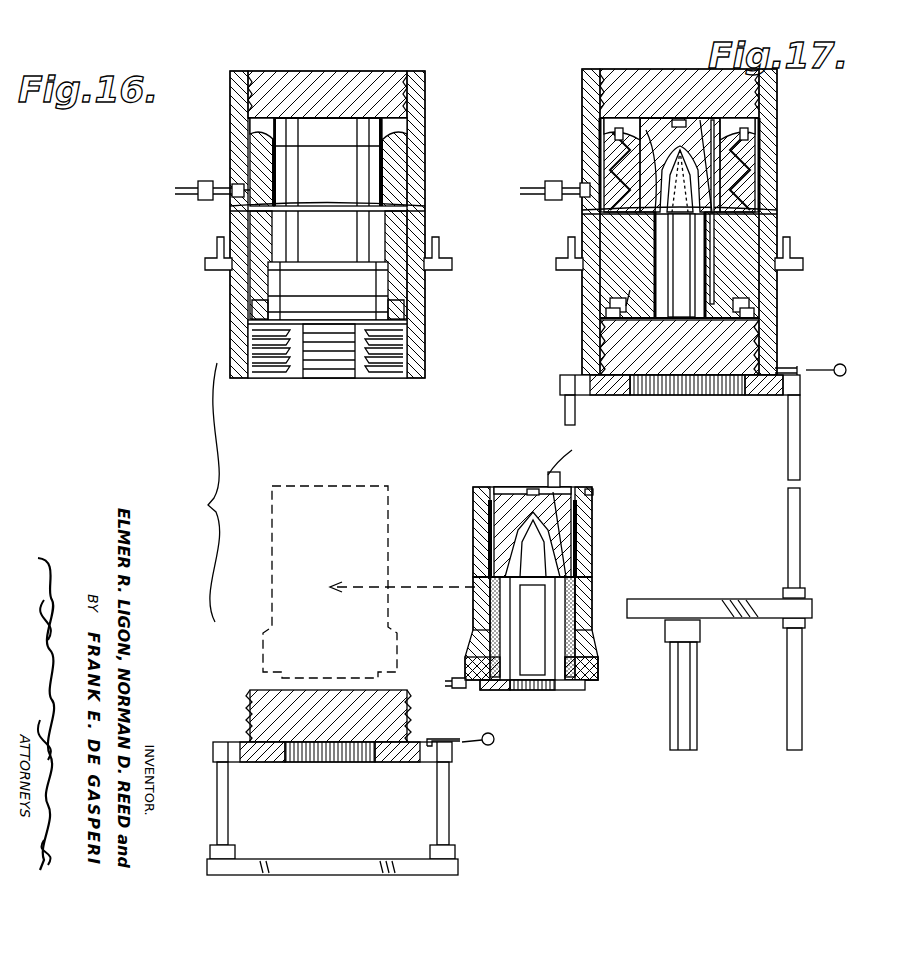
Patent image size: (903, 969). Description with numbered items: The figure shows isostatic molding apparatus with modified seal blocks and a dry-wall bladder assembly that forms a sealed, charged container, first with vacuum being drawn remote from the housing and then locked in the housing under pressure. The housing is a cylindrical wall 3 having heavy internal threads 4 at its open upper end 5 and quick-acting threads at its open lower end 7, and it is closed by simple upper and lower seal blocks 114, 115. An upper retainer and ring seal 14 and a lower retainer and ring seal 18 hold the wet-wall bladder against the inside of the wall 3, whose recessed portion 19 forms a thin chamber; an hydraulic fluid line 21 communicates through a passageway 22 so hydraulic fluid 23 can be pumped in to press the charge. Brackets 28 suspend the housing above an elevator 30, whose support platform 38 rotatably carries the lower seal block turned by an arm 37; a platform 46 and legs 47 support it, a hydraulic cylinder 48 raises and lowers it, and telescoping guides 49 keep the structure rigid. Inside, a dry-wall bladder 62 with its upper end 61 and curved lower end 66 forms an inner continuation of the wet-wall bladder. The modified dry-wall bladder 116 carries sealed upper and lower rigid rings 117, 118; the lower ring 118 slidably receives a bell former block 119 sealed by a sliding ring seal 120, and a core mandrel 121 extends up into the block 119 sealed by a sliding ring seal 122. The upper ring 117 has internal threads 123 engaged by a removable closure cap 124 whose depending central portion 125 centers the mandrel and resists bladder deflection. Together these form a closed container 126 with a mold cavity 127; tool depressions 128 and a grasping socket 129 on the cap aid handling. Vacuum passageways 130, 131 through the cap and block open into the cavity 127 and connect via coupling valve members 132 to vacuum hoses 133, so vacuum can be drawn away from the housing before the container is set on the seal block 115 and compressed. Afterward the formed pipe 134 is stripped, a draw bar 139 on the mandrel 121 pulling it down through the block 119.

In FIG. 16, the cylindrical wall 3 is at (427, 78).
In FIG. 17, the cylindrical wall 3 is at (582, 86).
In FIG. 16, the internal threads 4 is at (250, 100).
In FIG. 17, the internal threads 4 is at (604, 100).
In FIG. 16, the open upper end 5 is at (427, 100).
In FIG. 17, the open upper end 5 is at (777, 100).
In FIG. 16, the open lower end 7 is at (232, 333).
In FIG. 17, the open lower end 7 is at (582, 313).
In FIG. 16, the upper retainer and ring seal 14 is at (262, 122).
In FIG. 17, the upper retainer and ring seal 14 is at (616, 122).
In FIG. 16, the lower retainer and ring seal 18 is at (254, 316).
In FIG. 17, the lower retainer and ring seal 18 is at (604, 324).
In FIG. 16, the recessed portion 19 is at (398, 186).
In FIG. 16, the hydraulic fluid line 21 is at (190, 196).
In FIG. 17, the hydraulic fluid line 21 is at (540, 196).
In FIG. 16, the passageway 22 is at (242, 203).
In FIG. 17, the passageway 22 is at (588, 204).
In FIG. 17, the hydraulic fluid 23 is at (757, 180).
In FIG. 16, the brackets 28 is at (210, 266).
In FIG. 17, the brackets 28 is at (560, 267).
In FIG. 16, the elevator 30 is at (450, 815).
In FIG. 17, the elevator 30 is at (801, 550).
In FIG. 16, the arm 37 is at (480, 747).
In FIG. 17, the arm 37 is at (838, 376).
In FIG. 16, the support platform 38 is at (214, 750).
In FIG. 17, the support platform 38 is at (562, 384).
In FIG. 16, the platform 46 is at (352, 860).
In FIG. 17, the platform 46 is at (754, 598).
In FIG. 16, the legs 47 is at (229, 815).
In FIG. 17, the legs 47 is at (576, 418).
In FIG. 17, the hydraulic cylinder 48 is at (698, 688).
In FIG. 17, the telescoping guides 49 is at (803, 688).
In FIG. 16, the upper end of dry-wall bladder 61 is at (396, 130).
In FIG. 17, the upper end of dry-wall bladder 61 is at (748, 132).
In FIG. 16, the dry-wall bladder 62 is at (258, 170).
In FIG. 17, the dry-wall bladder 62 is at (625, 166).
In FIG. 16, the lower end of dry-wall bladder 66 is at (396, 300).
In FIG. 17, the lower end of dry-wall bladder 66 is at (745, 300).
In FIG. 16, the upper seal block 114 is at (300, 76).
In FIG. 17, the upper seal block 114 is at (657, 74).
In FIG. 16, the lower seal block 115 is at (252, 690).
In FIG. 17, the lower seal block 115 is at (738, 398).
In FIG. 17, the dry-wall bladder 116 is at (770, 230).
In FIG. 17, the upper ring 117 is at (748, 142).
In FIG. 17, the lower ring 118 is at (712, 290).
In FIG. 17, the bell former block 119 is at (585, 690).
In FIG. 17, the sliding ring seal 120 is at (594, 664).
In FIG. 17, the core mandrel 121 is at (690, 232).
In FIG. 17, the sliding ring seal 122 is at (560, 658).
In FIG. 17, the internal threads 123 is at (498, 486).
In FIG. 17, the closure cap 124 is at (510, 487).
In FIG. 17, the depending central portion 125 is at (478, 542).
In FIG. 16, the container 126 is at (270, 567).
In FIG. 17, the container 126 is at (476, 600).
In FIG. 17, the mold cavity 127 is at (592, 585).
In FIG. 17, the tool depressions 128 is at (488, 487).
In FIG. 17, the grasping socket 129 is at (532, 488).
In FIG. 17, the vacuum passageway 130 is at (592, 522).
In FIG. 17, the vacuum passageway 131 is at (492, 690).
In FIG. 17, the vacuum hose coupling valve members 132 is at (466, 698).
In FIG. 17, the vacuum hoses 133 is at (560, 476).
In FIG. 17, the formed pipe 134 is at (618, 292).
In FIG. 17, the draw bar 139 is at (530, 690).